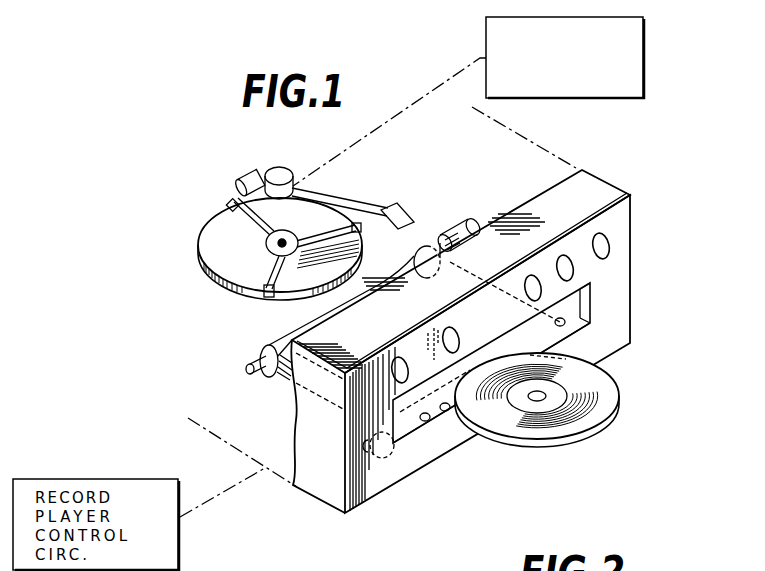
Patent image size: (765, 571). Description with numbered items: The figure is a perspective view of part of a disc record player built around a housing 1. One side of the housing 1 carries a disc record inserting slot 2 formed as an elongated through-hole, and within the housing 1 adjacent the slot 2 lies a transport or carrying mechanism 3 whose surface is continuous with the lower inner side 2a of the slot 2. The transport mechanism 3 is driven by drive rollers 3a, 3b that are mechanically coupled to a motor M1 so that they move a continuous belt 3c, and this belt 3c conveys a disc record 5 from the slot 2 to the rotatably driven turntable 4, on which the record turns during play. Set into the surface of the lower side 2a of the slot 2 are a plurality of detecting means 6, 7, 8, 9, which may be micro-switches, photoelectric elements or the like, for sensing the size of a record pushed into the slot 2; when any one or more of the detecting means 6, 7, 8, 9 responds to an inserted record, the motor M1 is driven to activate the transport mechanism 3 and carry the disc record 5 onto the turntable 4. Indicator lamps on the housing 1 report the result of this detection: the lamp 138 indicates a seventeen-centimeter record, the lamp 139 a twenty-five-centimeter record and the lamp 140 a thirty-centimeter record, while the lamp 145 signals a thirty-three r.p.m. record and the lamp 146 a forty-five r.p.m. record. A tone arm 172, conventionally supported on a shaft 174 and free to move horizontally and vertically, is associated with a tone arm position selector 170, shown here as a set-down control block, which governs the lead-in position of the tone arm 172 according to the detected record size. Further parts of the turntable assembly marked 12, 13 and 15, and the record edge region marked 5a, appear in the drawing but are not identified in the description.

The housing 1 is at (605, 196).
The disc record inserting slot 2 is at (568, 307).
The lower inner side of disc record inserting slot 2a is at (592, 340).
The transport mechanism 3 is at (413, 255).
The drive roller 3a is at (248, 366).
The drive roller 3b is at (385, 458).
The continuous belt 3c is at (282, 386).
The turntable 4 is at (216, 265).
The disc record 5 is at (547, 428).
The record edge 5a is at (617, 416).
The detecting means 6 is at (425, 424).
The detecting means 7 is at (443, 414).
The detecting means 8 is at (546, 396).
The detecting means 9 is at (585, 354).
The spoke 12 is at (252, 222).
The hub 13 is at (270, 238).
The support block 15 is at (228, 206).
The lamp 138 is at (531, 276).
The lamp 139 is at (565, 256).
The lamp 140 is at (608, 245).
The lamp 145 is at (398, 357).
The lamp 146 is at (452, 328).
The tone arm position selector 170 is at (617, 86).
The tone arm 172 is at (340, 199).
The shaft 174 is at (278, 170).
The motor M1 is at (458, 230).